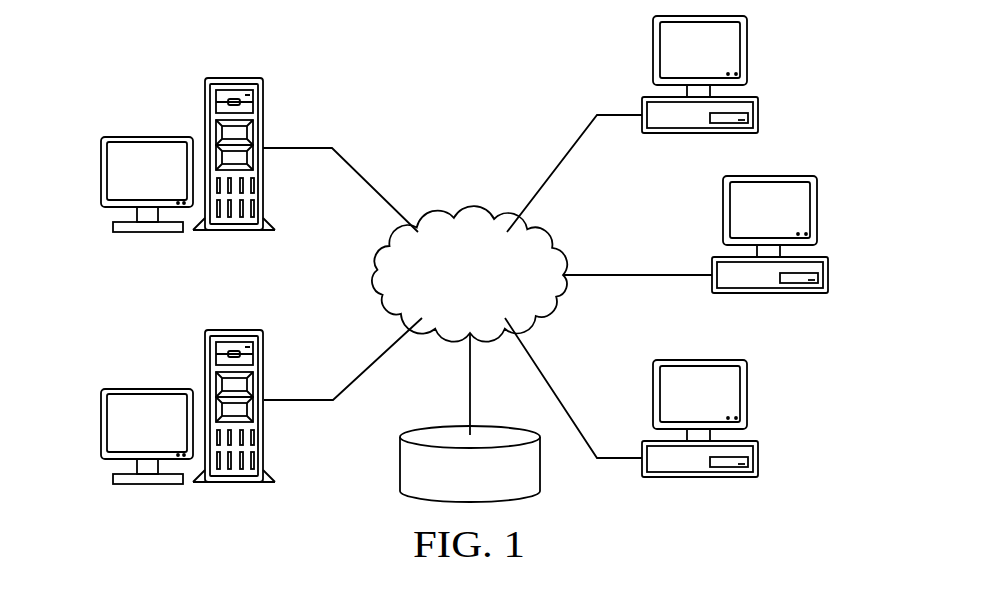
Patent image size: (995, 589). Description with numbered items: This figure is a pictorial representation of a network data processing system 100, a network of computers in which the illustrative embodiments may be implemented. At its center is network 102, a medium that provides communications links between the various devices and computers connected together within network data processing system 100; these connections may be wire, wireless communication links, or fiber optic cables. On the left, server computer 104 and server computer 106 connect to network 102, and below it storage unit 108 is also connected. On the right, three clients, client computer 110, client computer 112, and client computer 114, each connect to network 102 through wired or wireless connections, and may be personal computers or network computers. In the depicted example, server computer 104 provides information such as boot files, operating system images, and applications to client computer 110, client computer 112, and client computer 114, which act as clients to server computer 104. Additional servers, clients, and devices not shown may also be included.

The network data processing system 100 is at (338, 58).
The network 102 is at (443, 223).
The server computer 104 is at (101, 170).
The server computer 106 is at (102, 423).
The storage unit 108 is at (400, 462).
The client computer 110 is at (758, 103).
The client computer 112 is at (828, 285).
The client computer 114 is at (758, 468).